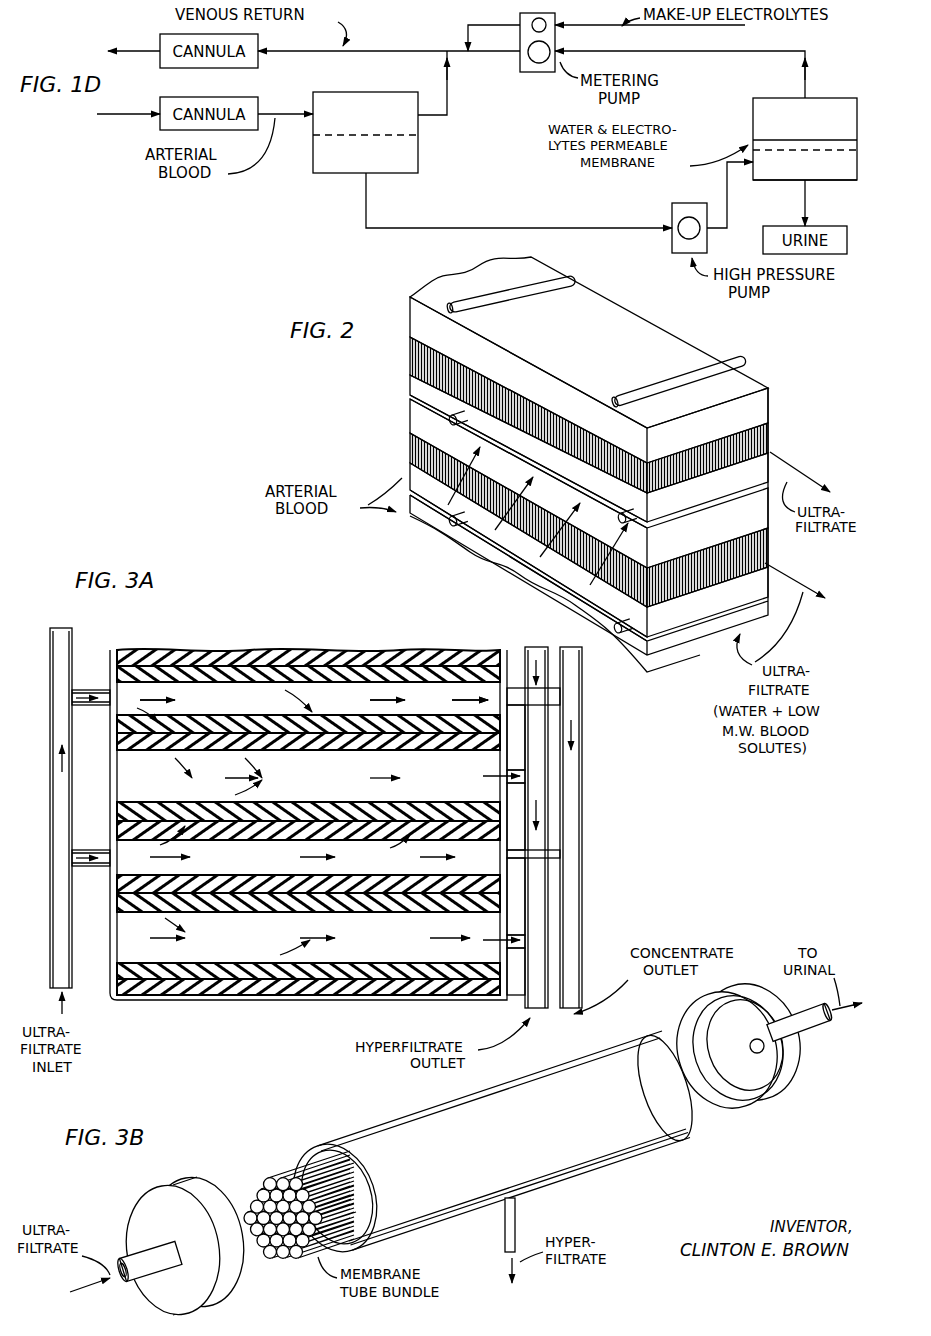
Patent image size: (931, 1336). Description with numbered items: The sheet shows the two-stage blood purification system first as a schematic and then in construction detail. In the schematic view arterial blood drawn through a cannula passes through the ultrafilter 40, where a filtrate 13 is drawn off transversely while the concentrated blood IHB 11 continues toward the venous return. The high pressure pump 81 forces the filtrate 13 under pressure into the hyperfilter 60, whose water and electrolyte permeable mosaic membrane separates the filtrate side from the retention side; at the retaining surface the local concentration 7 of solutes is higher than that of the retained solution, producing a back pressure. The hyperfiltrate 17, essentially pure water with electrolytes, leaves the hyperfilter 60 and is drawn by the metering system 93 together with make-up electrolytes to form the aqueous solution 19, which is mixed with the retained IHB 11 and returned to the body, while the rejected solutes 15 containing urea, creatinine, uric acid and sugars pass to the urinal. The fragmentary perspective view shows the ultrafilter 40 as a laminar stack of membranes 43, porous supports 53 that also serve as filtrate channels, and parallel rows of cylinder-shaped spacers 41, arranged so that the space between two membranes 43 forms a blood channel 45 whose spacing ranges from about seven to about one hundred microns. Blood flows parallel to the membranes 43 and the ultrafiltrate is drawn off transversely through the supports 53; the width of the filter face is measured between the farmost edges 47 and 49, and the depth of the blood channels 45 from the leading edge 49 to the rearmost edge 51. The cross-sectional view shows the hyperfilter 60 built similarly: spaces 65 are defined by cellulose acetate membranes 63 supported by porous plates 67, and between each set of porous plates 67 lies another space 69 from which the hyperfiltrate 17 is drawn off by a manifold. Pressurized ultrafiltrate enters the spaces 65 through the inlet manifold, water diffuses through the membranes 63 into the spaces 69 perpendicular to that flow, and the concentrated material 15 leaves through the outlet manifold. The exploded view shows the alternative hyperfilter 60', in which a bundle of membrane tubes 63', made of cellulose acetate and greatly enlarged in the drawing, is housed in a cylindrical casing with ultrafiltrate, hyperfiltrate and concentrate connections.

In FIG. 1D, the local concentration at retaining surface 7 is at (857, 148).
In FIG. 1D, the concentrated arterial blood IHB 11 is at (447, 100).
In FIG. 1D, the filtrate 13 is at (472, 227).
In FIG. 3A, the non-permeating solutes 15 is at (582, 983).
In FIG. 1D, the hyperfiltrate 17 is at (770, 53).
In FIG. 3A, the hyperfiltrate 17 is at (525, 1005).
In FIG. 1D, the aqueous solution 19 is at (455, 47).
In FIG. 1D, the ultrafilter 40 is at (376, 165).
In FIG. 2, the ultrafilter 40 is at (588, 358).
In FIG. 2, the cylinder-shaped spacers 41 is at (578, 283).
In FIG. 2, the membranes 43 is at (417, 318).
In FIG. 2, the blood channel 45 is at (402, 397).
In FIG. 2, the farmost edge of filter face 47 is at (392, 502).
In FIG. 2, the leading edge 49 is at (648, 678).
In FIG. 2, the rearmost edge 51 is at (772, 620).
In FIG. 2, the porous supports 53 is at (770, 440).
In FIG. 1D, the hyperfilter 60 is at (805, 139).
In FIG. 3A, the hyperfilter 60 is at (308, 805).
In FIG. 3A, the membranes 63 is at (308, 826).
In FIG. 1D, the spaces 65 is at (843, 172).
In FIG. 3A, the spaces 65 is at (270, 690).
In FIG. 3A, the porous plates 67 is at (112, 744).
In FIG. 1D, the space 69 is at (850, 118).
In FIG. 3A, the space 69 is at (125, 787).
In FIG. 1D, the high pressure pump 81 is at (672, 215).
In FIG. 1D, the metering system 93 is at (520, 18).
In FIG. 3B, the alternative hyperfilter design 60' is at (556, 1127).
In FIG. 3B, the membrane tubes 63' is at (296, 1191).